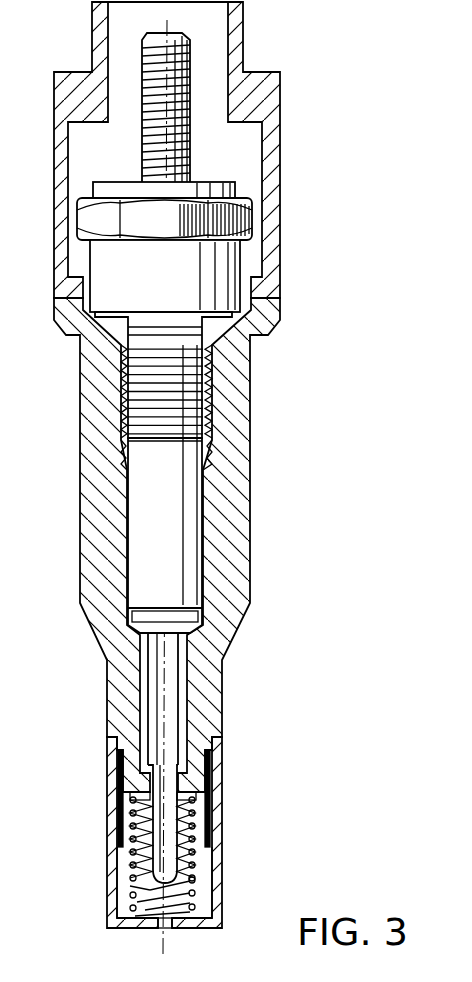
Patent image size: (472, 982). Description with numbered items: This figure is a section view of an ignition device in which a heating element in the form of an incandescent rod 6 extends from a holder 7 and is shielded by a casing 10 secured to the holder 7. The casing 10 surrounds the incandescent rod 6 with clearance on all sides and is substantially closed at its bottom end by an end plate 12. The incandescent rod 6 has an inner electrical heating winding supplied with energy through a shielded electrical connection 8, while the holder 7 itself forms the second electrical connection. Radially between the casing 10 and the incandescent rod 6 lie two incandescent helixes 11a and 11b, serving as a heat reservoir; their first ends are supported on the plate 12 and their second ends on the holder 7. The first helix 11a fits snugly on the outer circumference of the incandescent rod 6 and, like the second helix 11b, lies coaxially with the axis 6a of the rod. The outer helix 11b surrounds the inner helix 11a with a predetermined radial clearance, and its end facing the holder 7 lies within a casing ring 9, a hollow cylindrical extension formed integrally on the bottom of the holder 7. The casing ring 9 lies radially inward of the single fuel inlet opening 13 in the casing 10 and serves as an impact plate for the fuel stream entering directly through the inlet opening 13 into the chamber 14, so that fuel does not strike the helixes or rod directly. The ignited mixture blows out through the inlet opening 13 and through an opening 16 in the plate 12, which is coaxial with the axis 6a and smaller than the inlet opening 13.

The incandescent rod 6 is at (168, 787).
The axis of the incandescent rod 6a is at (165, 678).
The holder 7 is at (103, 522).
The shielded electrical connection 8 is at (191, 66).
The casing ring 9 is at (123, 836).
The casing 10 is at (112, 758).
The first helix 11a is at (180, 910).
The second helix 11b is at (192, 880).
The end plate 12 is at (130, 927).
The fuel inlet opening 13 is at (218, 825).
The chamber 14 is at (122, 888).
The plate opening 16 is at (158, 930).